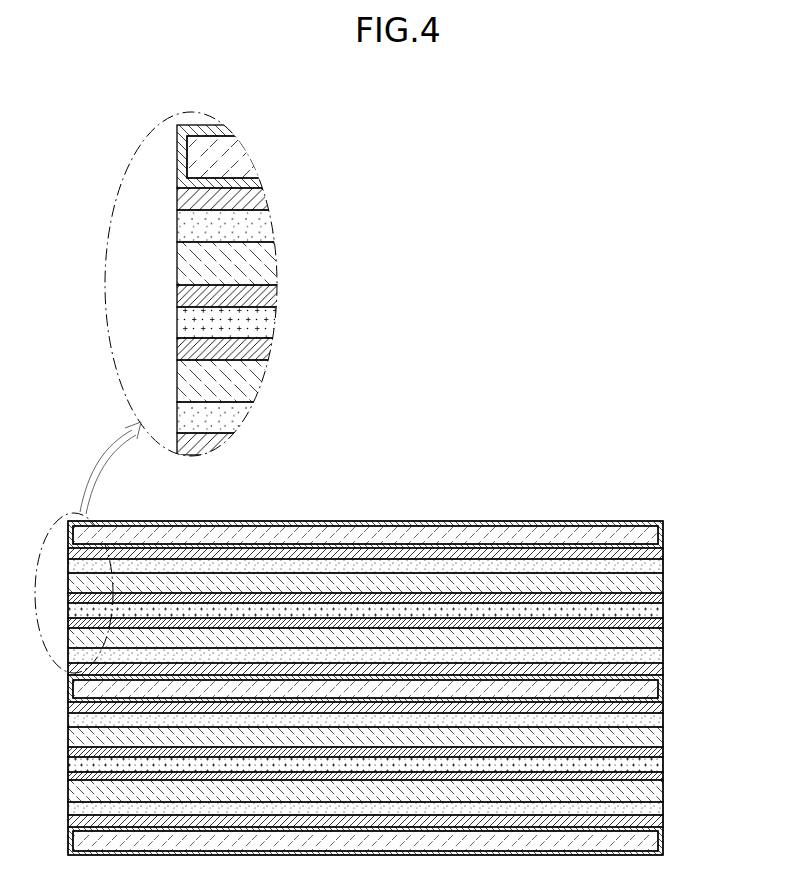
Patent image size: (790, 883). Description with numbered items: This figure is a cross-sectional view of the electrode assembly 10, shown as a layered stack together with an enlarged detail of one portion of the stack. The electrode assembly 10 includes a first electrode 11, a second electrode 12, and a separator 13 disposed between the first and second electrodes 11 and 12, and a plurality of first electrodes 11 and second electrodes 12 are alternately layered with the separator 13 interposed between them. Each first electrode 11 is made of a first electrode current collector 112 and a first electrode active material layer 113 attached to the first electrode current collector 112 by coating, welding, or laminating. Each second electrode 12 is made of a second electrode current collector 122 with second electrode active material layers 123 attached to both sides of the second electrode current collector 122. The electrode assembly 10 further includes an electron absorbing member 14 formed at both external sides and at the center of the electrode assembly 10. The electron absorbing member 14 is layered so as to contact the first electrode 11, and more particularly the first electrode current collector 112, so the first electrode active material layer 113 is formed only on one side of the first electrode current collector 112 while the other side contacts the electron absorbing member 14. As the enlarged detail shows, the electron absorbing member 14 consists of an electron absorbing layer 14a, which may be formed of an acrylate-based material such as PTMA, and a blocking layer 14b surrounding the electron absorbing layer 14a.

The electrode assembly 10 is at (472, 388).
The first electrode 11 is at (403, 508).
The first electrode current collector 112 is at (257, 198).
The first electrode active material layer 113 is at (253, 229).
The second electrode 12 is at (403, 530).
The second electrode current collector 122 is at (258, 322).
The second electrode active material layer 123 is at (262, 293).
The separator 13 is at (195, 267).
The electron absorbing member 14 is at (398, 490).
The electron absorbing layer 14a is at (193, 145).
The blocking layer 14b is at (183, 182).